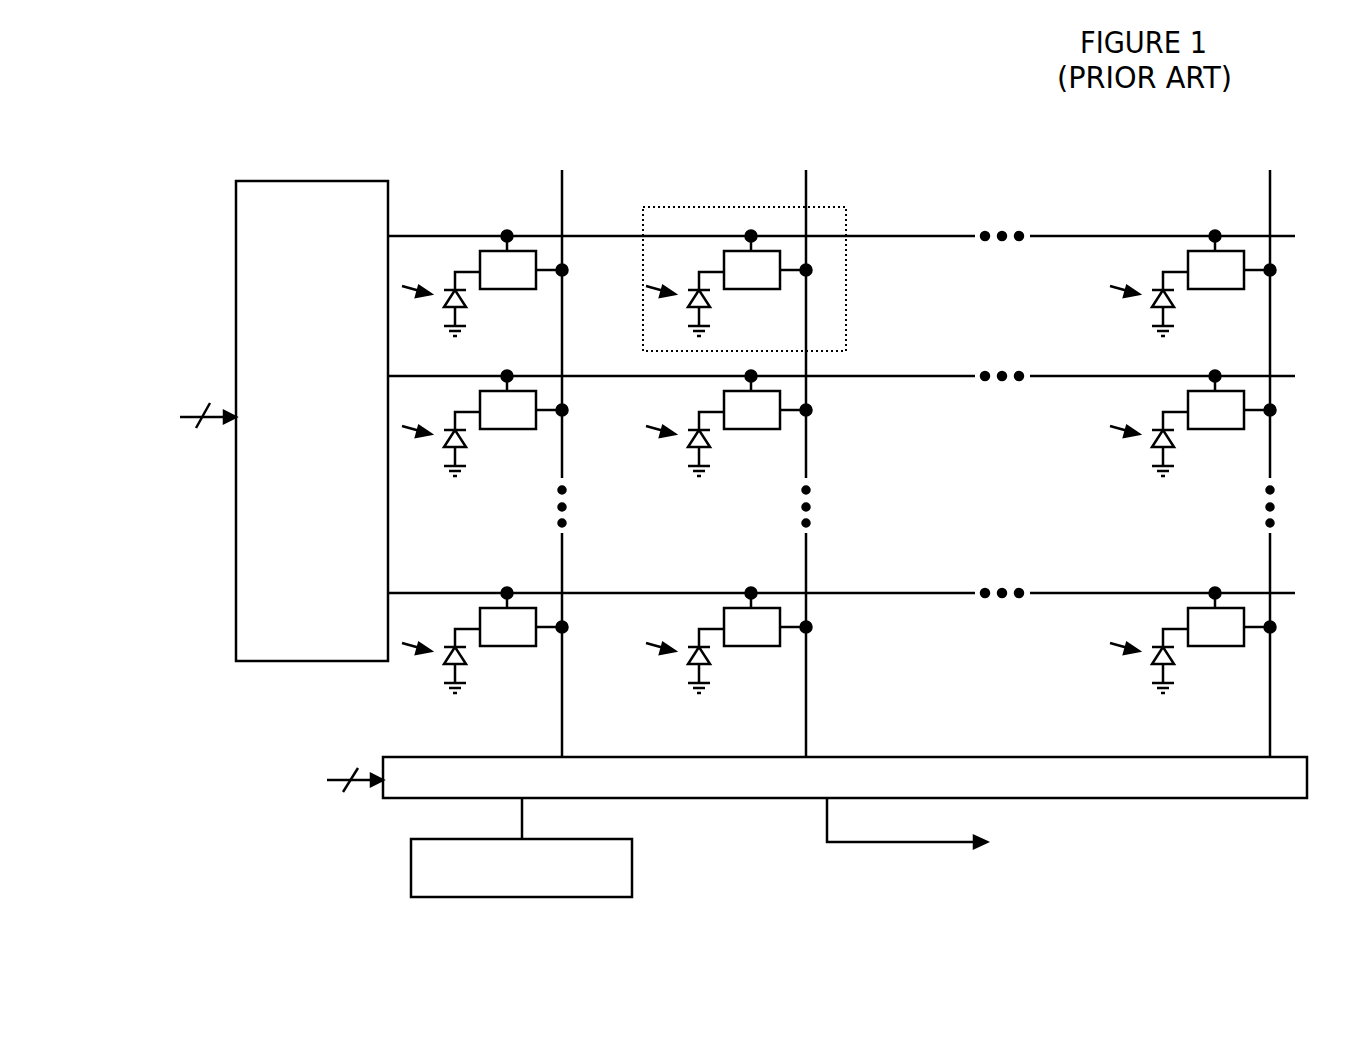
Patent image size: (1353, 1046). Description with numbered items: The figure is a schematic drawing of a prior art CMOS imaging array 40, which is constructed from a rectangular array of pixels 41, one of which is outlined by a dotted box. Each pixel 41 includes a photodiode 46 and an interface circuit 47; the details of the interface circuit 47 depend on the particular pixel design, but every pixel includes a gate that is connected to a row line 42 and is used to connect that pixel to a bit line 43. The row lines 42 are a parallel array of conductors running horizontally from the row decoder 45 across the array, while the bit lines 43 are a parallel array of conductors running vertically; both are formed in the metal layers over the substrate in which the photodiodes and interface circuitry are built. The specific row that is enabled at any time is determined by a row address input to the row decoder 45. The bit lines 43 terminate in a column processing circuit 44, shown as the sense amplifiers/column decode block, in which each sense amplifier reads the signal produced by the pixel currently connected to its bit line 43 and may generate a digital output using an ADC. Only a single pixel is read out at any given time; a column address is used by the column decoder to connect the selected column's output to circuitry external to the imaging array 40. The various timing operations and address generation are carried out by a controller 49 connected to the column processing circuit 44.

The imaging array 40 is at (150, 166).
The pixel 41 is at (706, 207).
The row line 42 is at (901, 234).
The bit line 43 is at (562, 568).
The column processing circuit 44 is at (934, 756).
The row decoder 45 is at (324, 181).
The photodiode 46 is at (467, 298).
The interface circuit 47 is at (493, 258).
The controller 49 is at (632, 868).